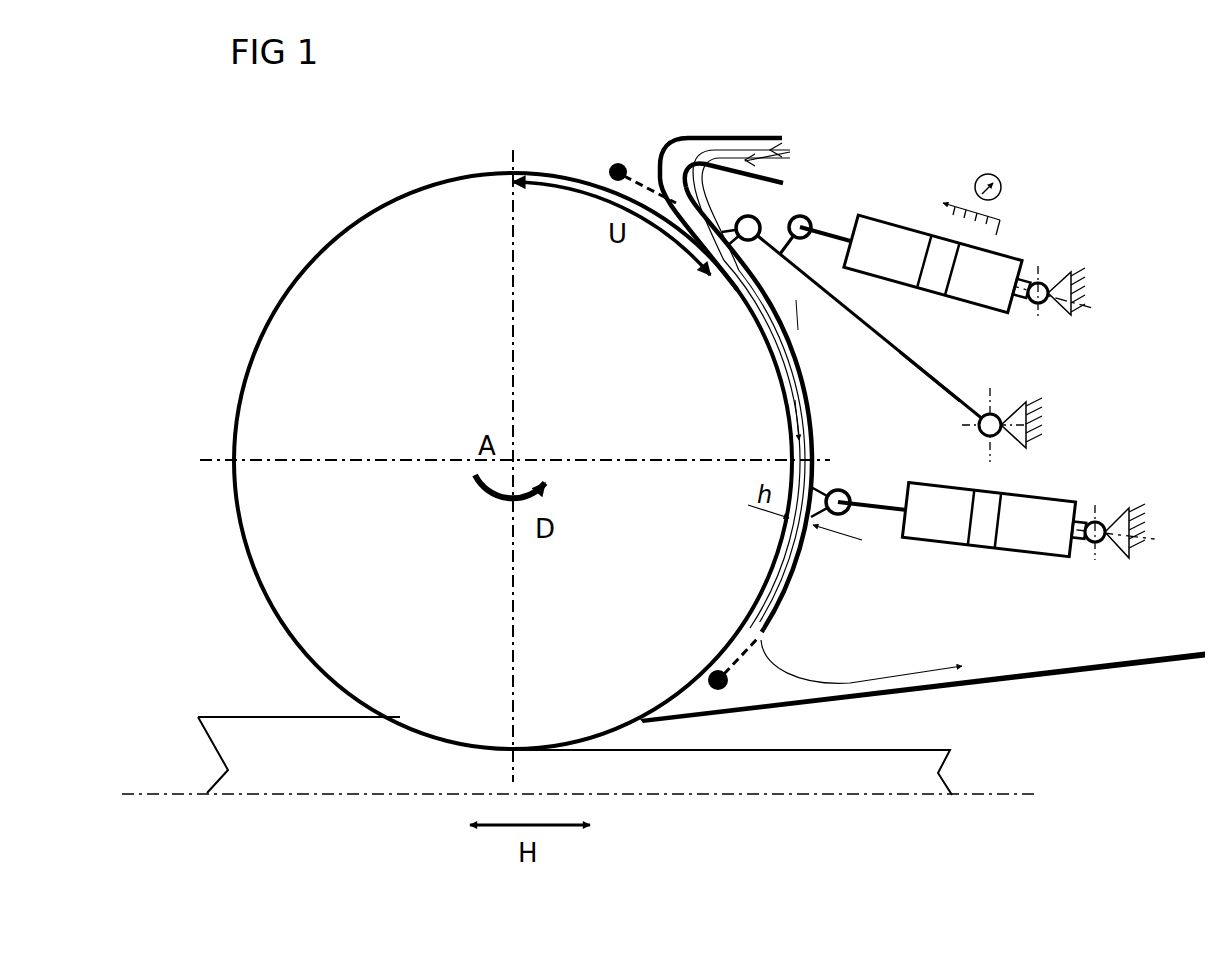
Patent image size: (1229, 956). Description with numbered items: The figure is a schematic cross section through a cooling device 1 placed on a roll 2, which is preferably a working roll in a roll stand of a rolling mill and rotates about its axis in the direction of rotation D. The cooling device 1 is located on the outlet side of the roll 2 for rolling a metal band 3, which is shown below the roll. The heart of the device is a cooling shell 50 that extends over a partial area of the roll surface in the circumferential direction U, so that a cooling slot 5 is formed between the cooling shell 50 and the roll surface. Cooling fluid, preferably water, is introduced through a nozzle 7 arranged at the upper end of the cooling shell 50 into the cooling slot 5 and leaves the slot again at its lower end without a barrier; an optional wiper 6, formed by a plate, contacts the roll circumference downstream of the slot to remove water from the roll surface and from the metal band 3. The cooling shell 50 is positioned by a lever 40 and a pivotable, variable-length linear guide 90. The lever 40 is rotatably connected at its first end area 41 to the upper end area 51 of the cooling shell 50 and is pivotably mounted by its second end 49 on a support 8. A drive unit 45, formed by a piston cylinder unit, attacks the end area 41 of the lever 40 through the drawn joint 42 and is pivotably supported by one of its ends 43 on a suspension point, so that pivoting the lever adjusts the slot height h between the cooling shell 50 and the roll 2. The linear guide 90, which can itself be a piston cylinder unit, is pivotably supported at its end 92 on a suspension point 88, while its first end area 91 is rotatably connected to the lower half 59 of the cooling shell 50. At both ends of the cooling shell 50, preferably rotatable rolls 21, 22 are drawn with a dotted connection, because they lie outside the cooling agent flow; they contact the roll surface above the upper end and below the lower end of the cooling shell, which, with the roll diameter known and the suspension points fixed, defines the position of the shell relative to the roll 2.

The cooling device 1 is at (862, 124).
The roll 2 is at (347, 273).
The metal band 3 is at (295, 745).
The cooling slot 5 is at (787, 369).
The wiper 6 is at (1058, 668).
The nozzle 7 is at (730, 137).
The support 8 is at (1000, 412).
The element for contacting the roll surface 21 is at (610, 170).
The element for contacting the roll surface 22 is at (707, 675).
The lever 40 is at (900, 365).
The first end area of the lever 41 is at (760, 266).
The piston rod joint 42 is at (808, 222).
The end of the piston cylinder unit 43 is at (1030, 275).
The drive unit 45 is at (892, 218).
The second end of the lever 49 is at (952, 397).
The cooling shell 50 is at (798, 410).
The upper end area of the cooling shell 51 is at (738, 268).
The lower half of the cooling shell 59 is at (757, 618).
The suspension point 88 is at (1104, 522).
The linear guide 90 is at (976, 552).
The first end area of the linear guide 91 is at (849, 514).
The end of the linear guide 92 is at (1080, 556).